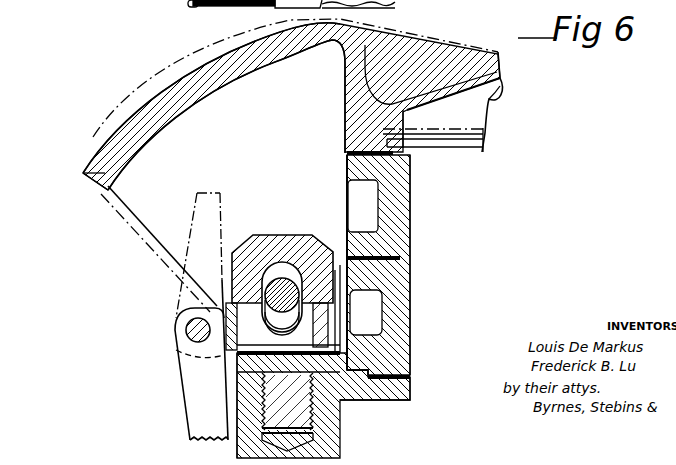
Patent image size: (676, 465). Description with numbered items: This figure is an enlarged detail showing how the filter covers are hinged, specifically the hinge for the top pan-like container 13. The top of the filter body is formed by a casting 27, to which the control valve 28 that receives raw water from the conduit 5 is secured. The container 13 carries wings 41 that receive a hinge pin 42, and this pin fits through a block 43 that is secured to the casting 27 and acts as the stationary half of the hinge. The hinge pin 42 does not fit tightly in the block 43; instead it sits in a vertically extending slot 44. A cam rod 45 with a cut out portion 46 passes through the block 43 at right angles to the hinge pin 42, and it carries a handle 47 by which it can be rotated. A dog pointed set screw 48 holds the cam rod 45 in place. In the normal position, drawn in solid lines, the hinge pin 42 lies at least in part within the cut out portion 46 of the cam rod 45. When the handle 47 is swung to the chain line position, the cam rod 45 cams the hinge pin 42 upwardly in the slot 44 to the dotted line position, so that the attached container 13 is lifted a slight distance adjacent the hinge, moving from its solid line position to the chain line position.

The conduit 5 is at (196, 9).
The pan-like container 13 is at (490, 104).
The casting 27 is at (197, 441).
The control valve 28 is at (397, 1).
The wings 41 is at (150, 233).
The hinge pin 42 is at (292, 268).
The block 43 is at (322, 270).
The vertically extending slot 44 is at (278, 263).
The cam rod 45 is at (245, 300).
The cut out portion 46 is at (288, 268).
The handle 47 is at (192, 390).
The dog pointed set screw 48 is at (337, 327).